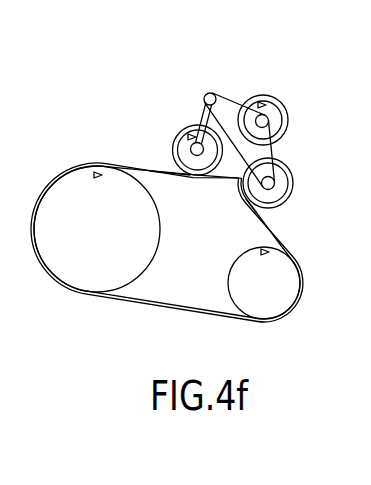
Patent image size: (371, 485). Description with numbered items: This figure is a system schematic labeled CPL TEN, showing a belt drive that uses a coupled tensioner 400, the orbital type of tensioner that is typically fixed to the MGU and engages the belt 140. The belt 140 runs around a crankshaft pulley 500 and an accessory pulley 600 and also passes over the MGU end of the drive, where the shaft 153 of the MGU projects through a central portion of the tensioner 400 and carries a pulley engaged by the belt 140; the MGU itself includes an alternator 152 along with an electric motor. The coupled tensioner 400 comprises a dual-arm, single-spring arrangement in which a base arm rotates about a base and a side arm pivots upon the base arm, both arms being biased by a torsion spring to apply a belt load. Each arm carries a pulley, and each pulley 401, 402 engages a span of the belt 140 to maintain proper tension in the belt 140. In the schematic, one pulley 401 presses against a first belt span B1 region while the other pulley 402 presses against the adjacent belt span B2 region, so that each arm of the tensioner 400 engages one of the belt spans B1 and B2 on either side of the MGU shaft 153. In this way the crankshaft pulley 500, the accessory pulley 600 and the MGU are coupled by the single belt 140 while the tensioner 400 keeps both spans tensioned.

The belt 140 is at (160, 308).
The alternator 152 is at (279, 91).
The shaft 153 is at (268, 121).
The coupled tensioner 400 is at (252, 143).
The pulley 401 is at (283, 203).
The pulley 402 is at (178, 140).
The crankshaft pulley 500 is at (117, 267).
The accessory pulley 600 is at (262, 300).
The belt span B1 is at (170, 174).
The belt span B2 is at (247, 208).